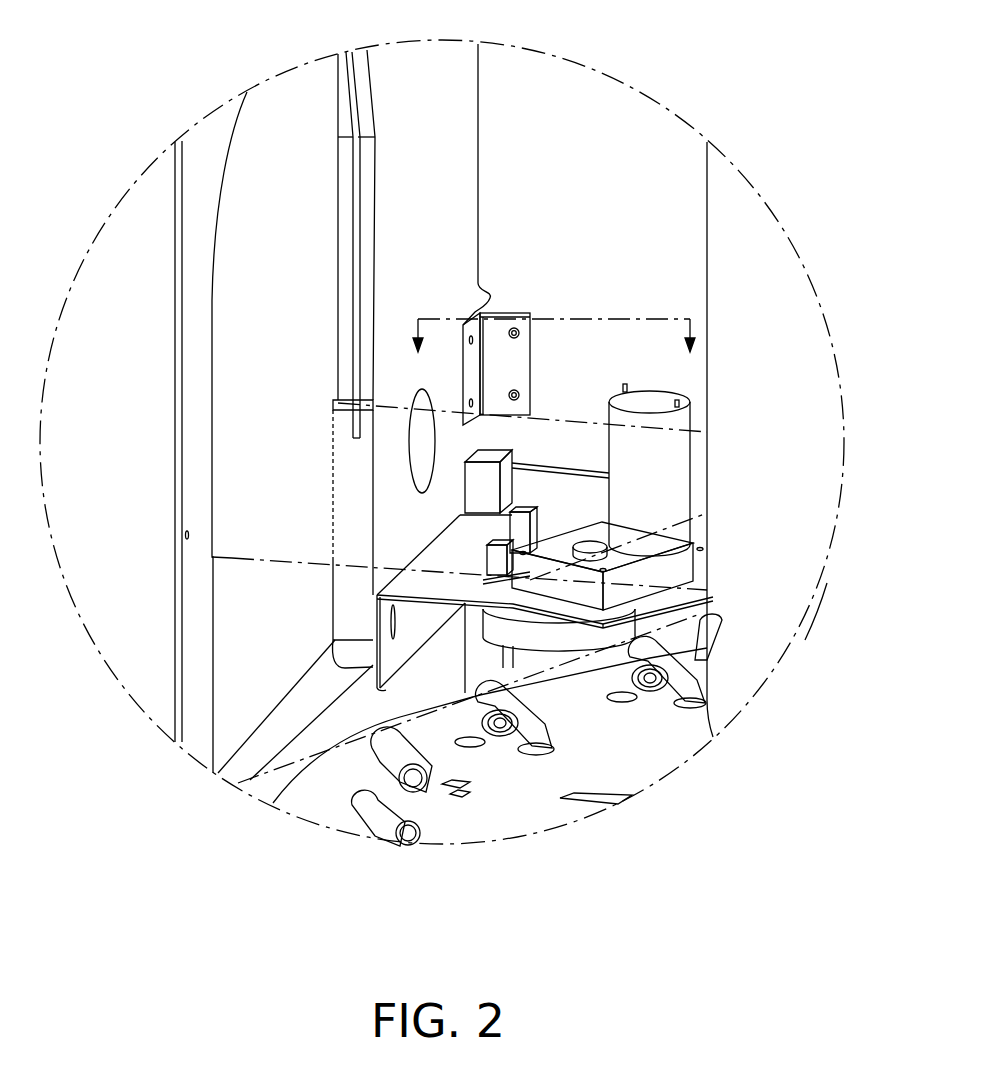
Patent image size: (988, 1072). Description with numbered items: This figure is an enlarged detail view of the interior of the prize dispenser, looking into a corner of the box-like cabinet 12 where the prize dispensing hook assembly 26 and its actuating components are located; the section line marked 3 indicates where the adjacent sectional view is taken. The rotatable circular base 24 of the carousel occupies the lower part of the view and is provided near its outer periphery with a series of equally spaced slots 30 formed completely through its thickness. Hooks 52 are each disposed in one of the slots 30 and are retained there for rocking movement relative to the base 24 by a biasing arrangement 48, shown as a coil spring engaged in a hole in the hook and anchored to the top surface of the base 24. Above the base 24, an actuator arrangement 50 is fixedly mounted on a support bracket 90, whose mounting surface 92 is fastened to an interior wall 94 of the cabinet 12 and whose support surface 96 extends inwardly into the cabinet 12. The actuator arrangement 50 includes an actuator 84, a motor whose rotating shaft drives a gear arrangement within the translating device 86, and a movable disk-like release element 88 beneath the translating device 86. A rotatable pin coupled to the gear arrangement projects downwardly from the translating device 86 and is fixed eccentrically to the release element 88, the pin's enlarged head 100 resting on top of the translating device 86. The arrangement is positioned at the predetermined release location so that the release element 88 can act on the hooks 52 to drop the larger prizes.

The cabinet 12 is at (604, 108).
The prize dispensing hook assembly 26 is at (830, 585).
The rotatable circular base 24 is at (303, 798).
The section line 3- 3 is at (554, 355).
The interior wall 94 is at (347, 478).
The support bracket 90 is at (375, 584).
The support surface 96 is at (448, 542).
The mounting surface 92 is at (427, 627).
The actuator 84 is at (680, 448).
The actuator arrangement 50 is at (722, 511).
The translating device 86 is at (690, 572).
The enlarged head 100 is at (588, 540).
The disk-like release element 88 is at (553, 643).
The slots 30 is at (435, 790).
The biasing arrangement 48 is at (657, 697).
The hooks 52 is at (683, 650).